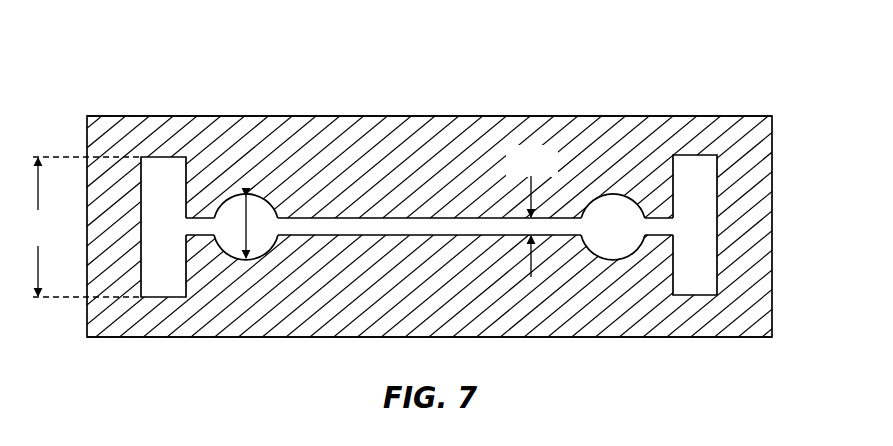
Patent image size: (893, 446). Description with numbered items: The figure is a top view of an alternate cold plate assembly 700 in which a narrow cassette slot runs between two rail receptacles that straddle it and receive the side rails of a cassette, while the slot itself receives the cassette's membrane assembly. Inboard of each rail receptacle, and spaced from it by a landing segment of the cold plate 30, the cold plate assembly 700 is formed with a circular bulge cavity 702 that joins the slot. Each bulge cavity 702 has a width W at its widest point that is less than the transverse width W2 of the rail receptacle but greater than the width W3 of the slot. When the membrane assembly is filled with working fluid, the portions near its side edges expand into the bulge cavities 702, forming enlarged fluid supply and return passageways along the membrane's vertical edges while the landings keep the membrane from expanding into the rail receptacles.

The cold plate assembly 700 is at (676, 61).
The cold plate 30 is at (372, 135).
The bulge cavity 702 is at (275, 193).
The width of bulge cavity W is at (230, 222).
The width of rail receptacle W2 is at (80, 227).
The width of slot W3 is at (531, 213).